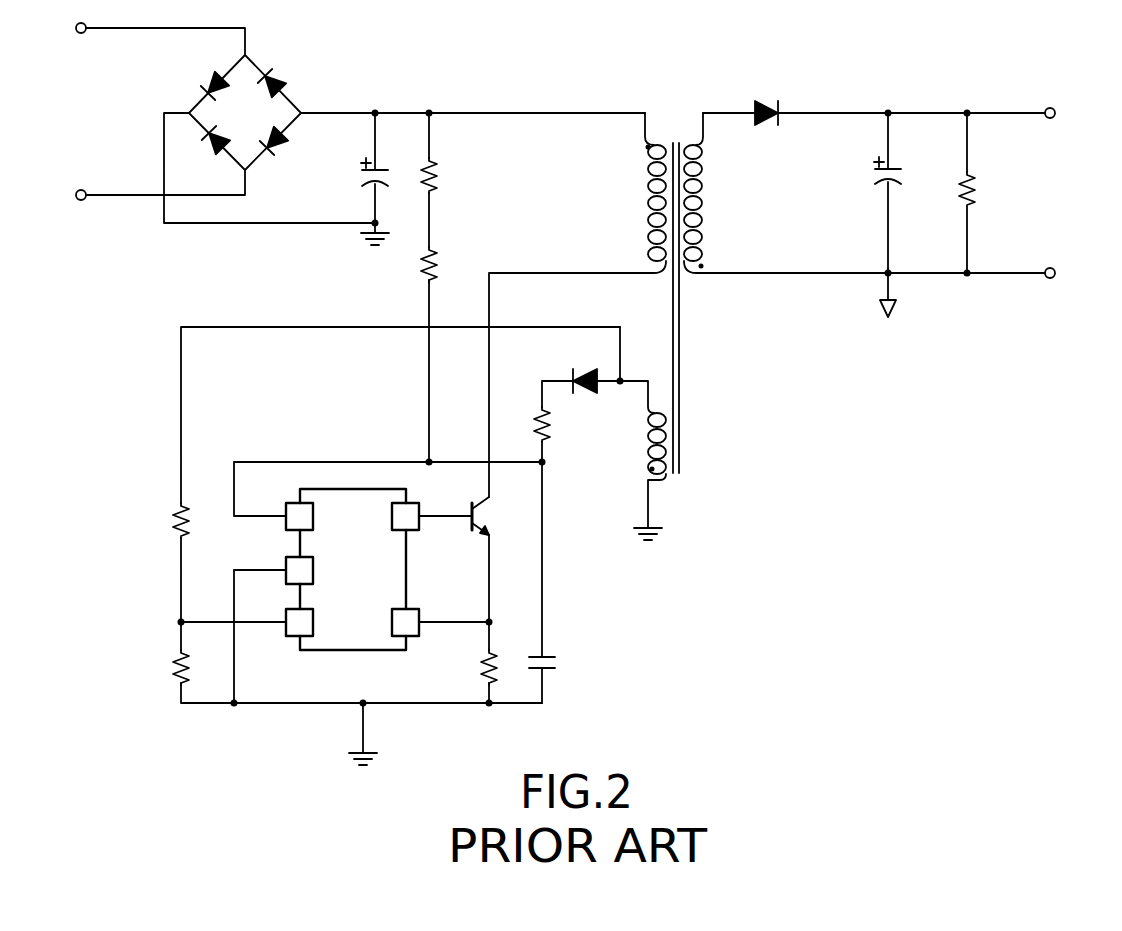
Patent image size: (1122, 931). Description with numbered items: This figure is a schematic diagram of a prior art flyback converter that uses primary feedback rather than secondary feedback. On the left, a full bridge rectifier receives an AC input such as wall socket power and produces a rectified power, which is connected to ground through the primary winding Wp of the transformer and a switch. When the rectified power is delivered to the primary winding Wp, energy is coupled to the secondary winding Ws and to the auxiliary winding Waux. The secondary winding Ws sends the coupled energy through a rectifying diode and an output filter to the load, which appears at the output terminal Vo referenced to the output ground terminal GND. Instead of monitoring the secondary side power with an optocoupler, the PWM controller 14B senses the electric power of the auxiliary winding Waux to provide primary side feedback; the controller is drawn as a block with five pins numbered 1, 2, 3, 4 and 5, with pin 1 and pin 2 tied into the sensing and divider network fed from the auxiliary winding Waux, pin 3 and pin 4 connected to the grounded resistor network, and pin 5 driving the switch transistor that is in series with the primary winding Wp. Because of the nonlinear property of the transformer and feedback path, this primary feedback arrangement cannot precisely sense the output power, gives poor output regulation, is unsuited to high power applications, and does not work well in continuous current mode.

The PWM controller 14B is at (352, 521).
The primary winding Wp is at (577, 305).
The secondary winding Ws is at (864, 193).
The auxiliary winding Waux is at (631, 433).
The output voltage terminal Vo is at (1067, 114).
The ground terminal GND is at (1081, 274).
The controller pin 1 is at (299, 516).
The controller pin 2 is at (299, 570).
The controller pin 3 is at (299, 622).
The controller pin 4 is at (405, 622).
The controller pin 5 is at (405, 516).